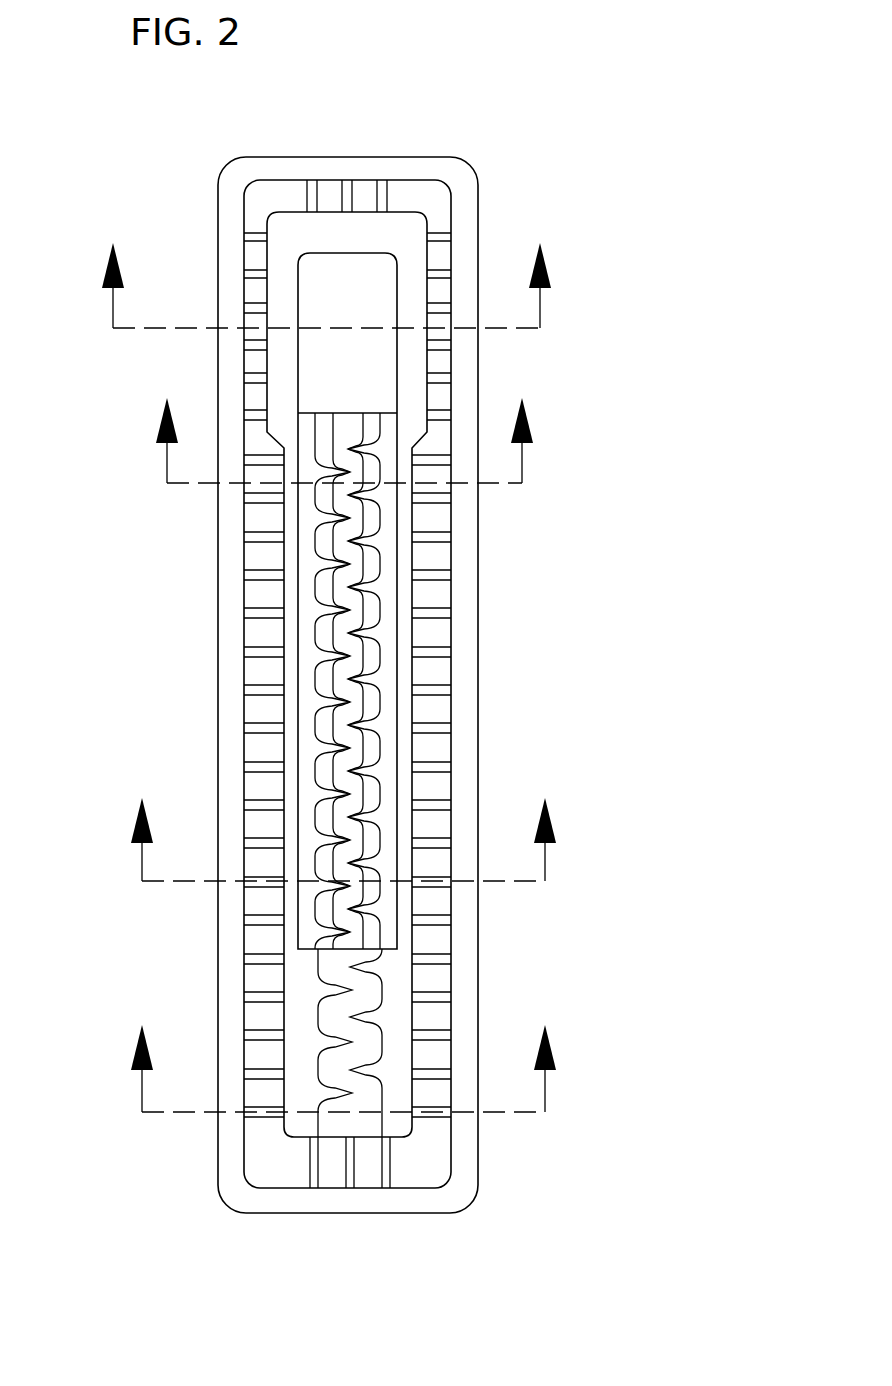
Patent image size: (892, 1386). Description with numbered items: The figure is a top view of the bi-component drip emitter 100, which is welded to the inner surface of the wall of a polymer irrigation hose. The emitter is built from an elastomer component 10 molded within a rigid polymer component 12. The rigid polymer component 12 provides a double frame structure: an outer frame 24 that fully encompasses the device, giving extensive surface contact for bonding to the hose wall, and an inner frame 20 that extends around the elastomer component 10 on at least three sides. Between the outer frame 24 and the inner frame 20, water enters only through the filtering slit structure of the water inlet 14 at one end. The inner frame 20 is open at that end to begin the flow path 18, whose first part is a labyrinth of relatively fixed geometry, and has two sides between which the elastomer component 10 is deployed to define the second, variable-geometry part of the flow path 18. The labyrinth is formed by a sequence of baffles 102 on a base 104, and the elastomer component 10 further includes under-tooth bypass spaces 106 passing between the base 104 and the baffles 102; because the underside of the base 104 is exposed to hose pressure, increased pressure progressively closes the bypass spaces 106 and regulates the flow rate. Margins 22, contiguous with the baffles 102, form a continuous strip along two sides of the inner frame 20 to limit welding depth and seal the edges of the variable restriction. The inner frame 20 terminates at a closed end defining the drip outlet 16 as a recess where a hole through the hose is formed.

The drip emitter 100 is at (508, 104).
The rigid polymer component 12 is at (478, 1178).
The outer frame 24 is at (473, 977).
The elastomer component 10 is at (390, 548).
The margins 22 is at (388, 590).
The frame 20 is at (402, 615).
The water inlet 14 is at (350, 1146).
The drip outlet 16 is at (362, 370).
The flow path 18 is at (350, 775).
The baffles 102 is at (347, 612).
The base 104 is at (327, 630).
The under-tooth bypass spaces 106 is at (352, 660).